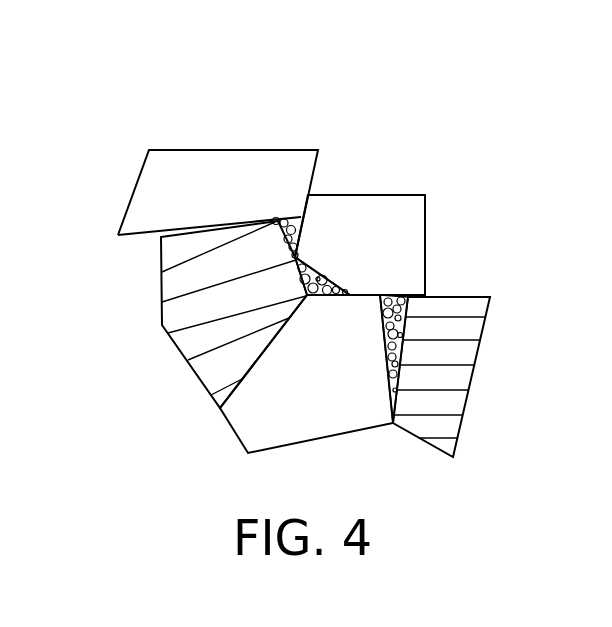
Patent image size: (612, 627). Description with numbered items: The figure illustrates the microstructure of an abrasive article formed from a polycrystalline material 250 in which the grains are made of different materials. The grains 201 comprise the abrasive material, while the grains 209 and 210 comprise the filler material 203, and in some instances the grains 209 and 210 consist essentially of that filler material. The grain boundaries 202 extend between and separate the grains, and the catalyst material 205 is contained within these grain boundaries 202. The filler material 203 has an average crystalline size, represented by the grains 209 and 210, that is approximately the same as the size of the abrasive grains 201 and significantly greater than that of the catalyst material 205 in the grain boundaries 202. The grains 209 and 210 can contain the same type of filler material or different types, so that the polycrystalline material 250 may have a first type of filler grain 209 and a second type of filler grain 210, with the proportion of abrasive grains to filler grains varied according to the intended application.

The polycrystalline material 250 is at (88, 127).
The grains 201 is at (271, 301).
The grain boundaries 202 is at (393, 285).
The filler material 203 is at (410, 296).
The catalyst material 205 is at (283, 215).
The grain 209 is at (217, 366).
The grain 210 is at (457, 338).